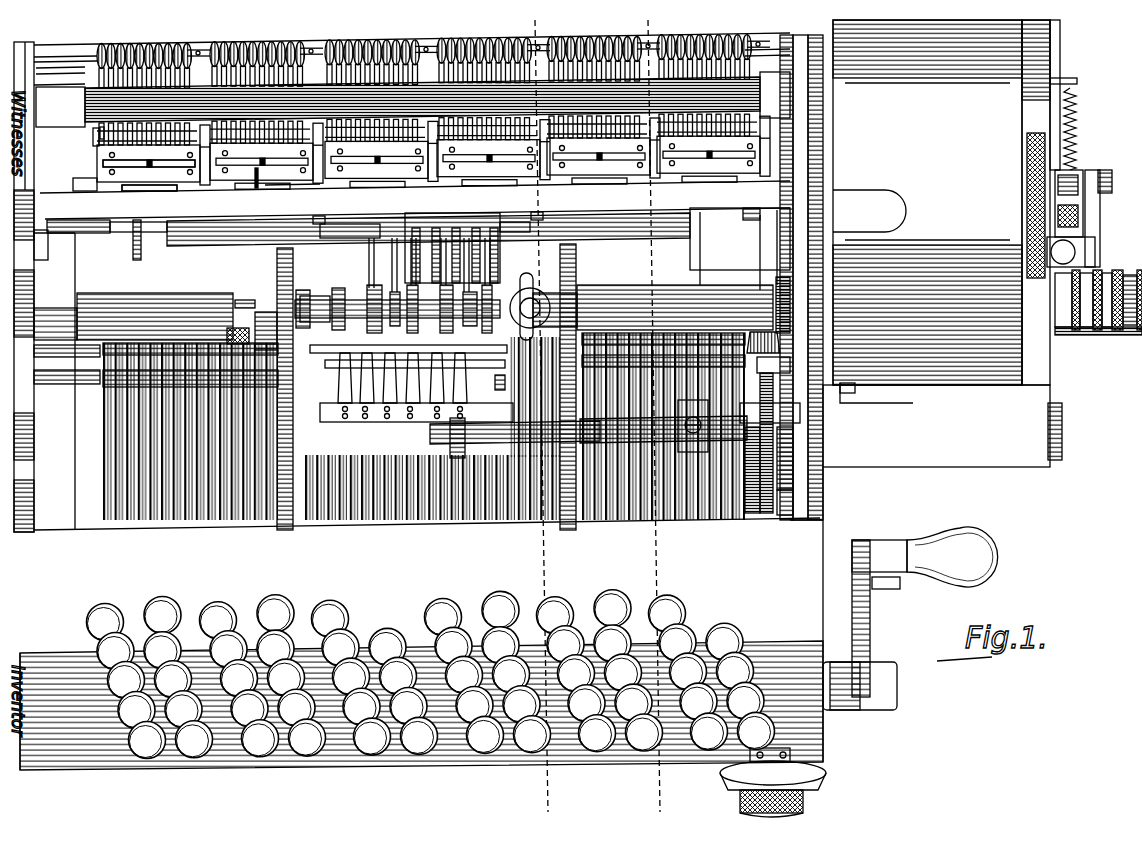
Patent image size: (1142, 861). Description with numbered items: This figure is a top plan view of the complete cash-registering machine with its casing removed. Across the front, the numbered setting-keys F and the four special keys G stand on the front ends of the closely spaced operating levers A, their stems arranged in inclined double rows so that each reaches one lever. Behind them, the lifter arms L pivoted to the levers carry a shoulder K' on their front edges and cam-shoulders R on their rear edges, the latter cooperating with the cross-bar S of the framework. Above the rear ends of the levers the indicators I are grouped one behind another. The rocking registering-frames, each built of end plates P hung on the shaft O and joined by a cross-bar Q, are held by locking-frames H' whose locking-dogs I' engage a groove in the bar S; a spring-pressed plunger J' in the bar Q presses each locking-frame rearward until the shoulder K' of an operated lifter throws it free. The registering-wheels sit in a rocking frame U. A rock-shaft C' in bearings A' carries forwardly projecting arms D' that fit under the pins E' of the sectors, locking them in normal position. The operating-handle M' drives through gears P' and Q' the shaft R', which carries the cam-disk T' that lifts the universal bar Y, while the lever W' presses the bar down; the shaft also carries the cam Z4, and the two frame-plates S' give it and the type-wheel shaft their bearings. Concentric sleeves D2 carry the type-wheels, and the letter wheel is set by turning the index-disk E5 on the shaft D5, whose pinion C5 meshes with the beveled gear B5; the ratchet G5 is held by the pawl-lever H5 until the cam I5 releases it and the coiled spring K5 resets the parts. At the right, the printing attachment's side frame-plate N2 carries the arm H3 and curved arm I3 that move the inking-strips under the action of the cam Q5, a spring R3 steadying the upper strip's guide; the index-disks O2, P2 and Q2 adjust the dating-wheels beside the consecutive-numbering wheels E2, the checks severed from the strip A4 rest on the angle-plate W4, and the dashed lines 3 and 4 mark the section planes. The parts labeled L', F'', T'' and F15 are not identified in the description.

The type wheel rollers L' is at (433, 104).
The shoulder K' is at (60, 75).
The operating levers A is at (427, 292).
The cross-bar S is at (60, 107).
The indicators I is at (411, 99).
The lifter arm L is at (83, 136).
The locking-dogs I' is at (418, 137).
The end plates P is at (406, 180).
The locking-frame H' is at (399, 153).
The cross-bar Q is at (418, 199).
The rock-shaft C' is at (428, 223).
The sliding block or plunger J' is at (423, 185).
The cam-shoulders R is at (474, 199).
The bearings A' is at (428, 207).
The arms or fingers D' is at (439, 236).
The stud or pin E' is at (427, 233).
The shaft O is at (70, 233).
The arm or lever W' is at (732, 252).
The post F'' is at (123, 240).
The universal bar Y is at (155, 307).
The frame-plates S' is at (423, 398).
The cam-disk T' is at (397, 285).
The rocking frame U is at (522, 276).
The concentric sleeves D2 is at (653, 307).
The beveled gear B5 is at (776, 292).
The beveled pinion C5 is at (762, 332).
The cam Z4 is at (470, 443).
The shaft R' is at (663, 426).
The cam I5 is at (757, 418).
The forwardly-extending shaft D5 is at (768, 514).
The coiled spring K5 is at (773, 500).
The frame plate T'' is at (829, 277).
The gear Q' is at (813, 459).
The gear P' is at (814, 507).
The holding-pawl lever H5 is at (800, 380).
The strip A4 is at (927, 202).
The ratchet G5 is at (820, 285).
The cam Q5 is at (1027, 212).
The side frame-plate N2 is at (1055, 62).
The spring R3 is at (1077, 130).
The vertically-extending arm H3 is at (1068, 176).
The curved arm I3 is at (1100, 224).
The index-disk O2 is at (1072, 330).
The index-disk P2 is at (1090, 332).
The index-disk Q2 is at (1110, 332).
The consecutive-numbering wheels E2 is at (1132, 308).
The angle-plate W4 is at (905, 467).
The operating-handle M' is at (910, 618).
The index-disk E5 is at (720, 773).
The knurled knob F15 is at (740, 796).
The section line 3 3 is at (560, 22).
The section line 4 4 is at (622, 22).
The special keys G is at (150, 597).
The setting-keys F is at (431, 666).